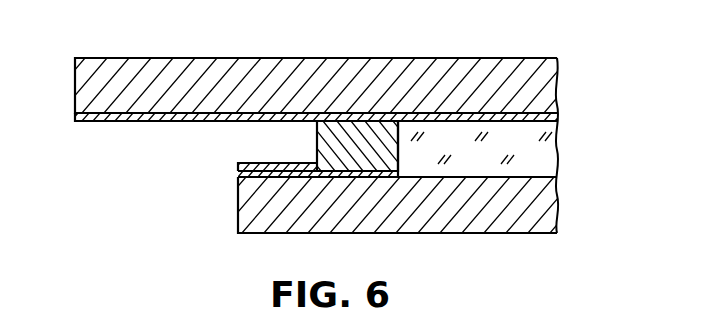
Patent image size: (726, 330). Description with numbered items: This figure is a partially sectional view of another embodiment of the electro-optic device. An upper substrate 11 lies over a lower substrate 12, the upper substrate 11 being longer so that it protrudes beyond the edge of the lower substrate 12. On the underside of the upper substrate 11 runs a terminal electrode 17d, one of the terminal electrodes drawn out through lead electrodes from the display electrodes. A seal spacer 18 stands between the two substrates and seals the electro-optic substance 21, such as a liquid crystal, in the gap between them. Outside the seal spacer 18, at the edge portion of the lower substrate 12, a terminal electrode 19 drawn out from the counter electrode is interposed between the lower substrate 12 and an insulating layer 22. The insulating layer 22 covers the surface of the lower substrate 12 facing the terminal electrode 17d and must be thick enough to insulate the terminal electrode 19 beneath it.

The upper substrate 11 is at (555, 84).
The lower substrate 12 is at (503, 229).
The terminal electrode 17d is at (105, 122).
The seal spacer 18 is at (337, 140).
The terminal electrode 19 is at (253, 174).
The electro-optic substance 21 is at (545, 147).
The insulating layer 22 is at (248, 162).